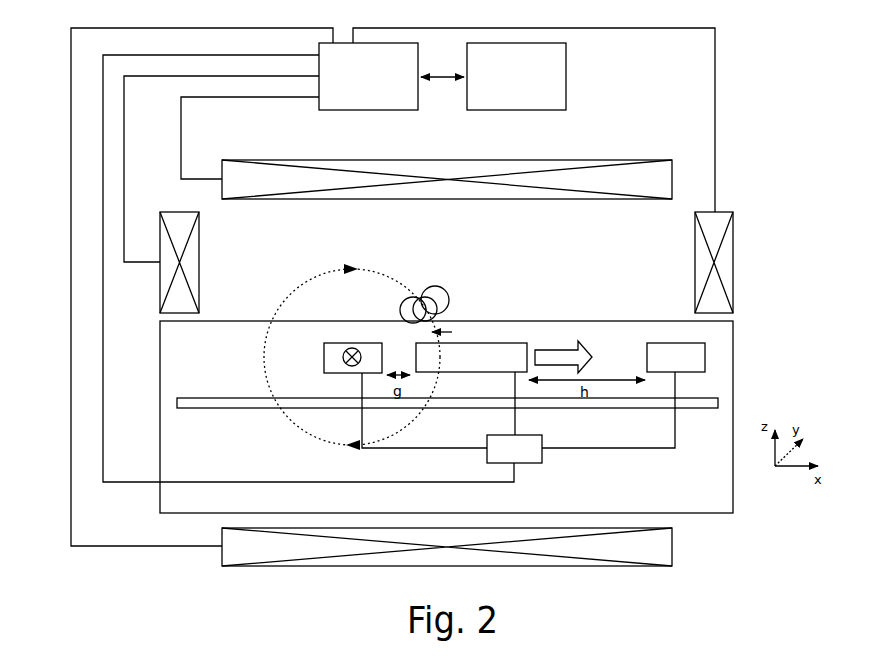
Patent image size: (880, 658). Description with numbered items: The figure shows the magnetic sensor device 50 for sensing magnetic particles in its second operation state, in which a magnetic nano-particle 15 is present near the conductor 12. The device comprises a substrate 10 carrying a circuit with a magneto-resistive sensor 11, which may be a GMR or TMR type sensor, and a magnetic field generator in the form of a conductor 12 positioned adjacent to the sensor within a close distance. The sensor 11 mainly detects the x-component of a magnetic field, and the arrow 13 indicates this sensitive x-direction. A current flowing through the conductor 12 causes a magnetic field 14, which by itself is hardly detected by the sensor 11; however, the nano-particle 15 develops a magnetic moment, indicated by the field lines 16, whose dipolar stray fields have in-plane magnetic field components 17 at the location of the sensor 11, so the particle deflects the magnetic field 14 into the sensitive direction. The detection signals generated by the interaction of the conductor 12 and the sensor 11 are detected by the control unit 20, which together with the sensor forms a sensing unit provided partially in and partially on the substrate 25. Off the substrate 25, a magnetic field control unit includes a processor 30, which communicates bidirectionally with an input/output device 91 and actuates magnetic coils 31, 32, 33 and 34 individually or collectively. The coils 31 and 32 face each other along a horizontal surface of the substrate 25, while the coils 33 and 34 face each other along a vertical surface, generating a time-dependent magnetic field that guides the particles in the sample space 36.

The sensor device 50 is at (744, 41).
The processor 30 is at (370, 108).
The input/output device 91 is at (556, 73).
The magnetic coil 33 is at (522, 163).
The magnetic coil 31 is at (199, 262).
The magnetic coil 32 is at (695, 258).
The substrate 25 is at (725, 497).
The sample space 36 is at (551, 267).
The conductor 12 is at (333, 343).
The magnetic field 14 is at (363, 271).
The magnetic nano-particle 15 is at (413, 297).
The field lines 16 is at (447, 290).
The in-plane magnetic field components 17 is at (452, 332).
The magneto-resistive sensor 11 is at (512, 343).
The arrow 13 is at (568, 341).
The substrate 10 is at (690, 410).
The control unit 20 is at (525, 460).
The magnetic coil 34 is at (662, 547).